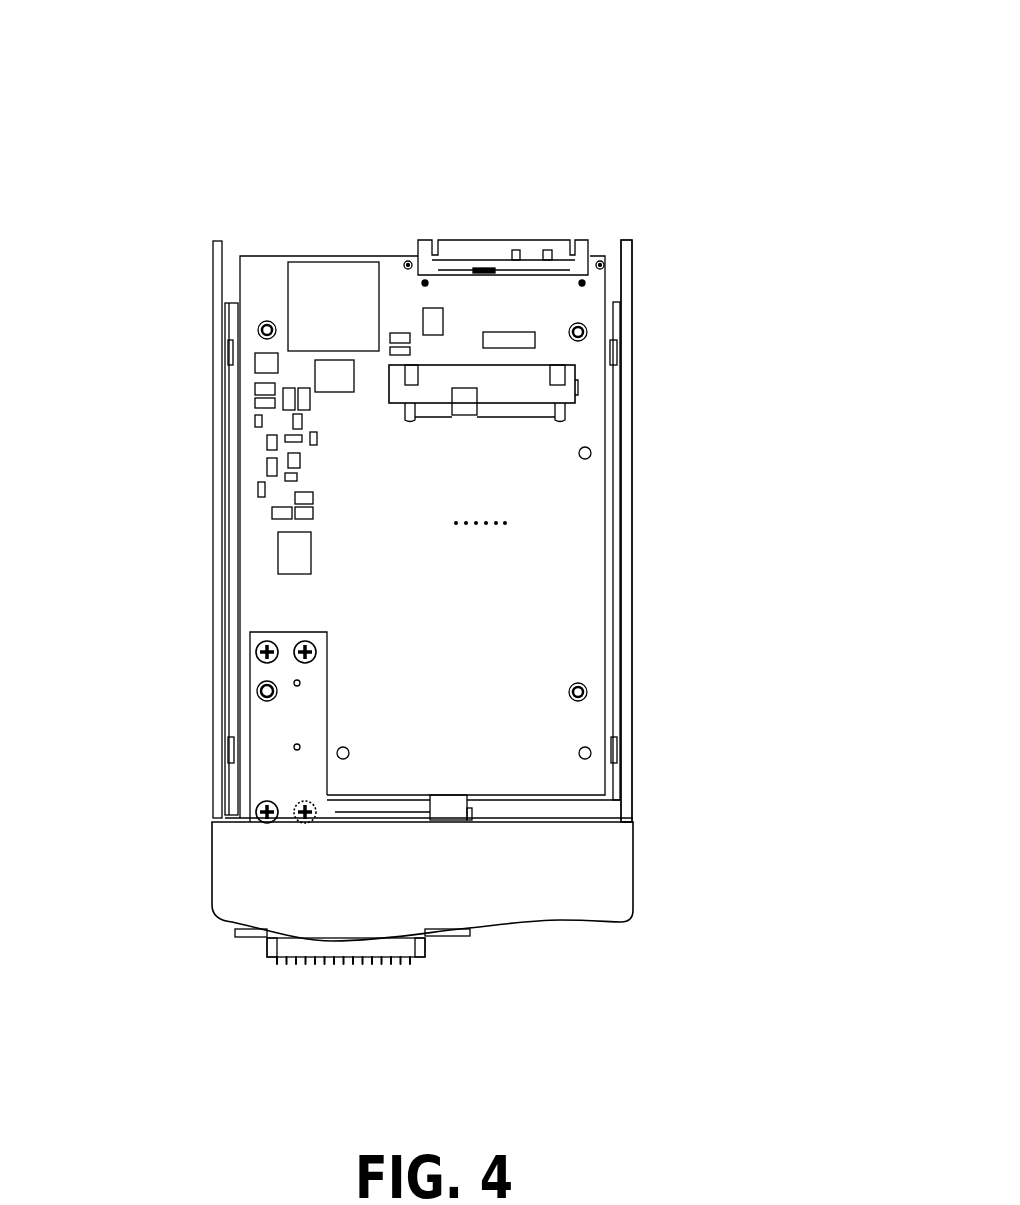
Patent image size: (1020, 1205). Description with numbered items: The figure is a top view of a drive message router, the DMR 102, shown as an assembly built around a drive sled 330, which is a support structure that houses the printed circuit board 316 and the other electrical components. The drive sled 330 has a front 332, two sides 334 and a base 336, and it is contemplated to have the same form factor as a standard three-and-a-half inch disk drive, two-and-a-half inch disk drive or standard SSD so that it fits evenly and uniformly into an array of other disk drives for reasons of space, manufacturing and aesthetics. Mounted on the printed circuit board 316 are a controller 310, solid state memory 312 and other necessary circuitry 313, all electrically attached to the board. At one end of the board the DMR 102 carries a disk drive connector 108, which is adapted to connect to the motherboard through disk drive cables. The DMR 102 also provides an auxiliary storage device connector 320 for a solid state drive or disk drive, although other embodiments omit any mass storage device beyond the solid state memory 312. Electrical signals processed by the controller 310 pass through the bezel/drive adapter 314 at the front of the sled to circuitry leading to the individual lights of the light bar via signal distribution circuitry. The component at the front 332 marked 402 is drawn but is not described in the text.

The drive message router 102 is at (422, 39).
The disk drive connector 108 is at (508, 238).
The controller 310 is at (337, 282).
The solid state memory 312 is at (263, 355).
The other necessary circuitry 313 is at (255, 469).
The bezel/drive adapter 314 is at (270, 728).
The printed circuit board 316 is at (532, 617).
The auxiliary storage device connector 320 is at (508, 417).
The drive sled 330 is at (633, 270).
The front 332 is at (493, 925).
The sides 334 is at (213, 552).
The base 336 is at (615, 302).
The edge connector 402 is at (335, 975).